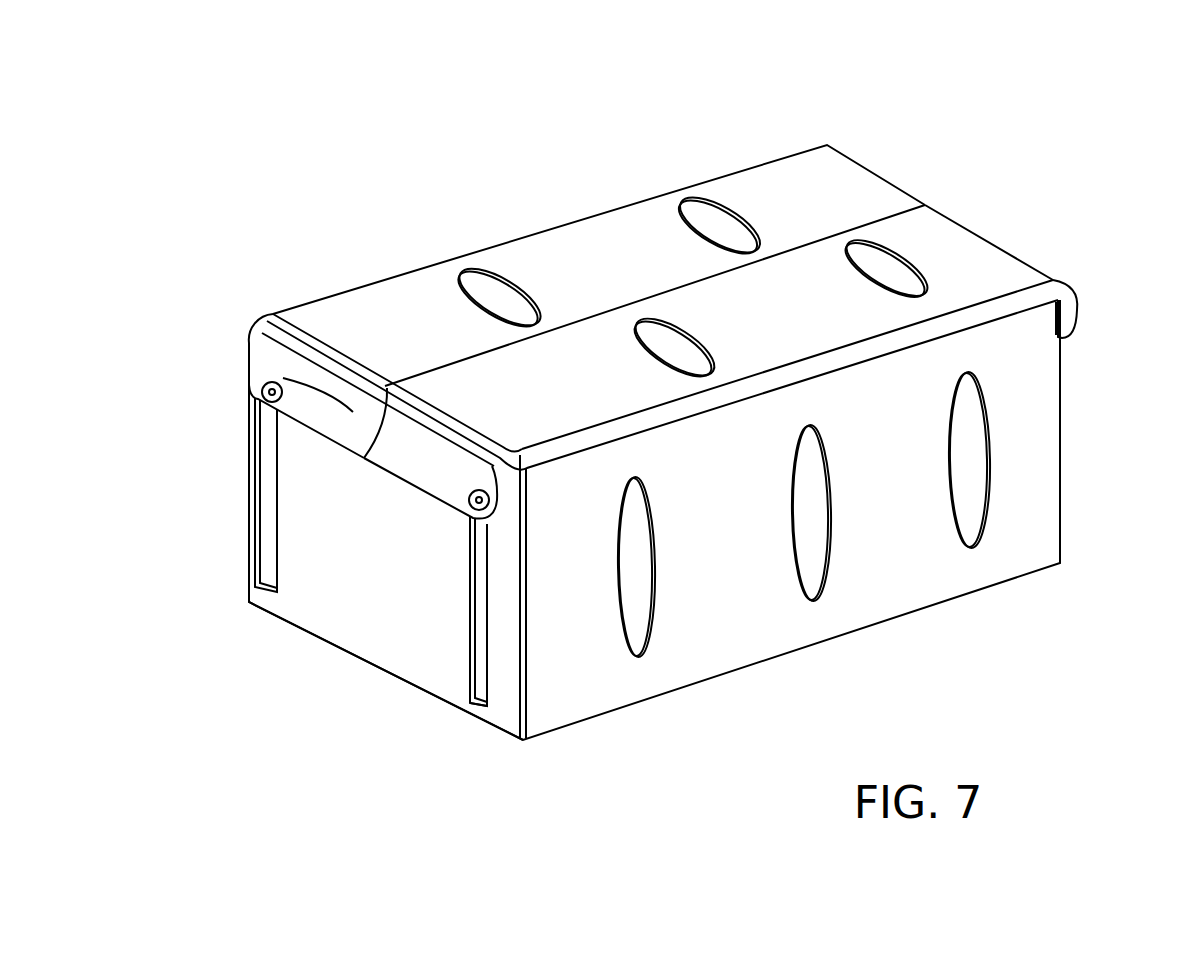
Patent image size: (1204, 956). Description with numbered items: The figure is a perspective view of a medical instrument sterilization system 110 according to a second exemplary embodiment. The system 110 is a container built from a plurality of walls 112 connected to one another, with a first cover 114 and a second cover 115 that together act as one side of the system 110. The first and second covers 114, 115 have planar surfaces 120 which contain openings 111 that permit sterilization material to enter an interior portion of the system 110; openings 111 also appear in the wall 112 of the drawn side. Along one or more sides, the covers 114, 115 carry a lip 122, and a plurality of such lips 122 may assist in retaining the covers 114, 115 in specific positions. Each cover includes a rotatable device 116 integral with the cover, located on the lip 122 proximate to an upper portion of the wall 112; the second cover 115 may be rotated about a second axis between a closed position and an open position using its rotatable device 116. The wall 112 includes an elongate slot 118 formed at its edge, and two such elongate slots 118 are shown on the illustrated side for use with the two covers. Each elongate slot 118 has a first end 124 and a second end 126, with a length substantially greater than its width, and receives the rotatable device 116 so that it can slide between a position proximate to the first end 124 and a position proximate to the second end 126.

The medical instrument sterilization system 110 is at (360, 207).
The openings 111 is at (685, 193).
The wall 112 is at (323, 618).
The first cover 114 is at (950, 243).
The second cover 115 is at (845, 183).
The rotatable device 116 is at (500, 507).
The elongate slot 118 is at (480, 598).
The planar surfaces 120 is at (610, 237).
The lip 122 is at (252, 343).
The first end 124 is at (472, 707).
The second end 126 is at (490, 533).